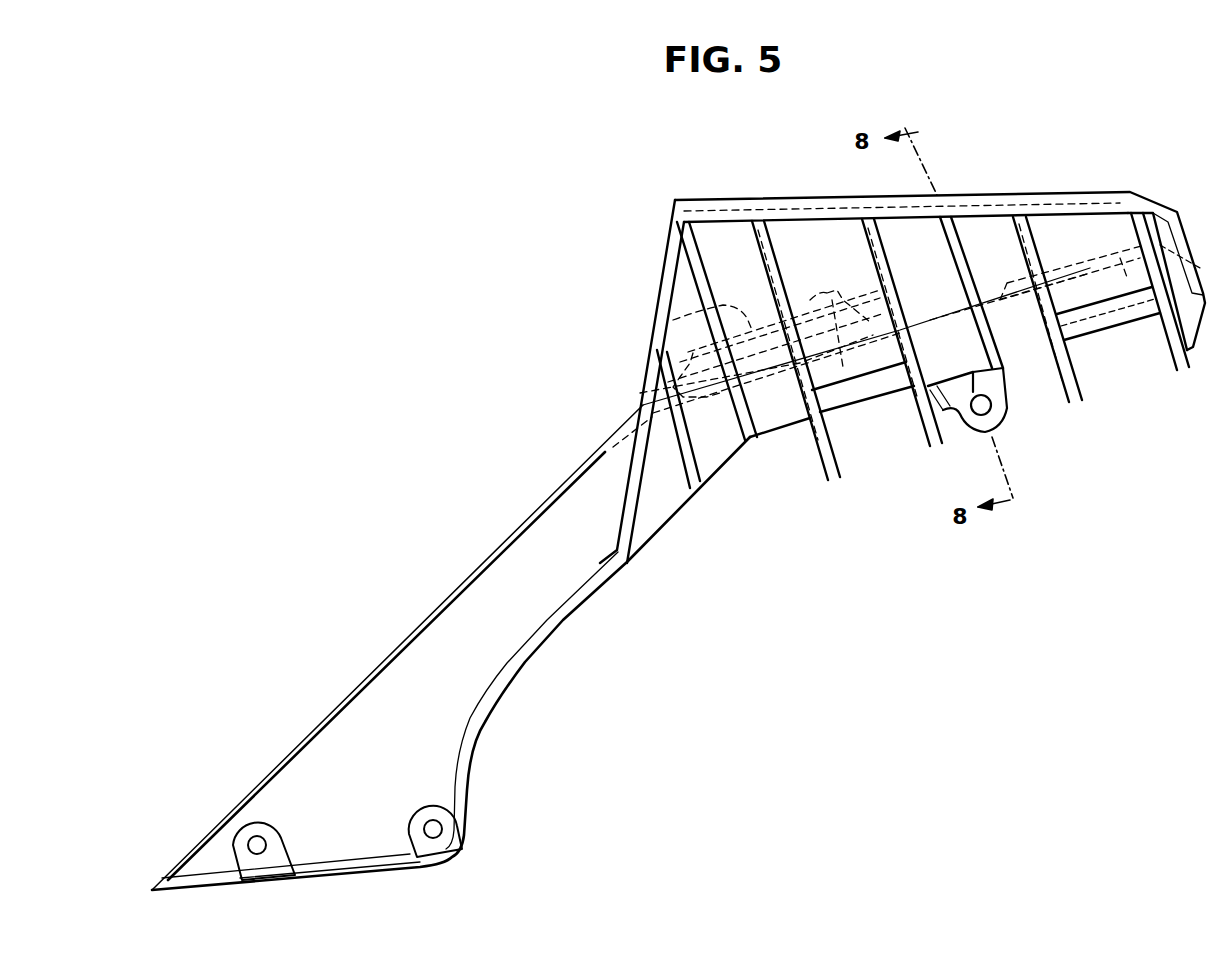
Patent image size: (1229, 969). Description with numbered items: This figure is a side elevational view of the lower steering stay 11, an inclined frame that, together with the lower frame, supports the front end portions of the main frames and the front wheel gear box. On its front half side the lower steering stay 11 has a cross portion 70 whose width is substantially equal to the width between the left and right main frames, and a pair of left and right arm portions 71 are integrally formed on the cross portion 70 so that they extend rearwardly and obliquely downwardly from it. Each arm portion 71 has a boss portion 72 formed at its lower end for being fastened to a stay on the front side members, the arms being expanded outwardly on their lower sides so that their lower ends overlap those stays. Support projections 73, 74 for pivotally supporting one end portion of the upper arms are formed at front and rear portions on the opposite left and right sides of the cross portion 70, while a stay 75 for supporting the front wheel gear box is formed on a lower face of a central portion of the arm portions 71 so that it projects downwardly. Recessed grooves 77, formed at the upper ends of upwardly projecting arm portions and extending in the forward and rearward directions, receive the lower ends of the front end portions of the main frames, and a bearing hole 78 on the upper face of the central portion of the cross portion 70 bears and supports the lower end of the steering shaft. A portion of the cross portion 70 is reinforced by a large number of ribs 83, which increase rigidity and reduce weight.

The lower steering stay 11 is at (540, 340).
The cross portion 70 is at (783, 420).
The arm portions 71 is at (548, 502).
The boss portion 72 is at (410, 826).
The support projection 73 is at (1075, 393).
The support projection 74 is at (935, 442).
The stay 75 is at (1002, 414).
The recessed grooves 77 is at (800, 232).
The bearing hole 78 is at (673, 320).
The ribs 83 is at (755, 233).